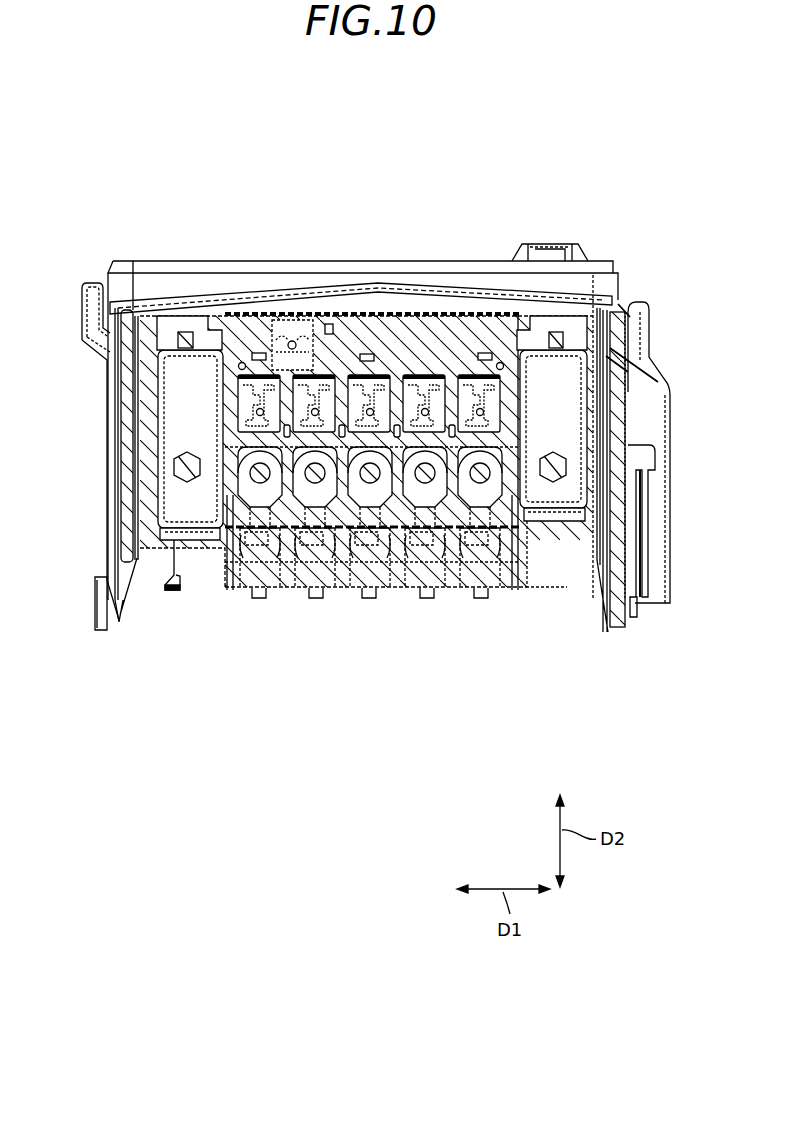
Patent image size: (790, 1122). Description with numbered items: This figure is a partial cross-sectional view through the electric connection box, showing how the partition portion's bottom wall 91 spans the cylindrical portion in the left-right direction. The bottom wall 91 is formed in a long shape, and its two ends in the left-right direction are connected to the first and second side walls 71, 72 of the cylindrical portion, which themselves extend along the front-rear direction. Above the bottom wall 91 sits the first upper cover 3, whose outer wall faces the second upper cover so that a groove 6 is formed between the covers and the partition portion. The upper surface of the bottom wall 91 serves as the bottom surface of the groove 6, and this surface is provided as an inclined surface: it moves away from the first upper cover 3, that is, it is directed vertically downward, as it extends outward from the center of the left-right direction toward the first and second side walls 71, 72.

The first upper cover 3 is at (247, 258).
The groove 6 is at (462, 286).
The bottom wall 91 is at (414, 290).
The first side wall 71 is at (620, 433).
The second side wall 72 is at (100, 455).